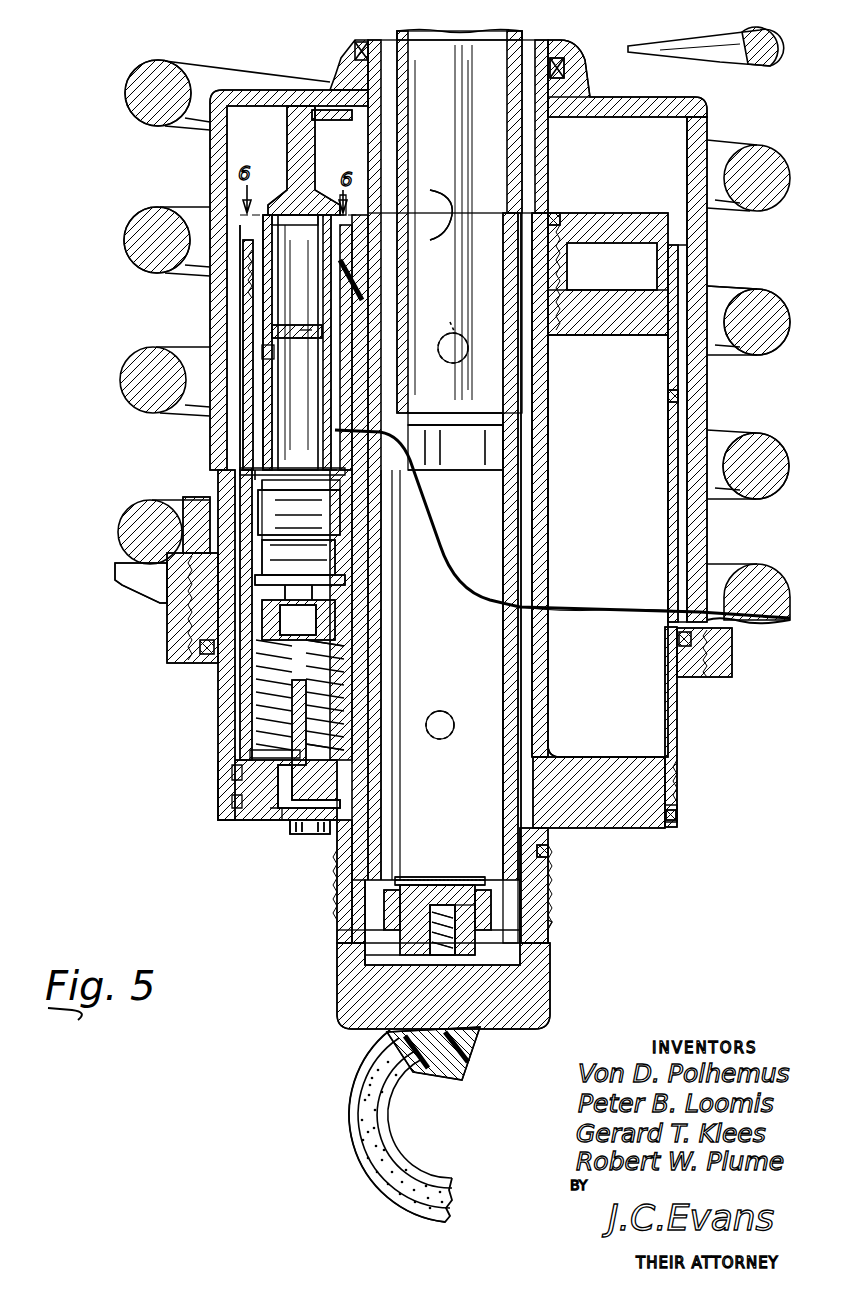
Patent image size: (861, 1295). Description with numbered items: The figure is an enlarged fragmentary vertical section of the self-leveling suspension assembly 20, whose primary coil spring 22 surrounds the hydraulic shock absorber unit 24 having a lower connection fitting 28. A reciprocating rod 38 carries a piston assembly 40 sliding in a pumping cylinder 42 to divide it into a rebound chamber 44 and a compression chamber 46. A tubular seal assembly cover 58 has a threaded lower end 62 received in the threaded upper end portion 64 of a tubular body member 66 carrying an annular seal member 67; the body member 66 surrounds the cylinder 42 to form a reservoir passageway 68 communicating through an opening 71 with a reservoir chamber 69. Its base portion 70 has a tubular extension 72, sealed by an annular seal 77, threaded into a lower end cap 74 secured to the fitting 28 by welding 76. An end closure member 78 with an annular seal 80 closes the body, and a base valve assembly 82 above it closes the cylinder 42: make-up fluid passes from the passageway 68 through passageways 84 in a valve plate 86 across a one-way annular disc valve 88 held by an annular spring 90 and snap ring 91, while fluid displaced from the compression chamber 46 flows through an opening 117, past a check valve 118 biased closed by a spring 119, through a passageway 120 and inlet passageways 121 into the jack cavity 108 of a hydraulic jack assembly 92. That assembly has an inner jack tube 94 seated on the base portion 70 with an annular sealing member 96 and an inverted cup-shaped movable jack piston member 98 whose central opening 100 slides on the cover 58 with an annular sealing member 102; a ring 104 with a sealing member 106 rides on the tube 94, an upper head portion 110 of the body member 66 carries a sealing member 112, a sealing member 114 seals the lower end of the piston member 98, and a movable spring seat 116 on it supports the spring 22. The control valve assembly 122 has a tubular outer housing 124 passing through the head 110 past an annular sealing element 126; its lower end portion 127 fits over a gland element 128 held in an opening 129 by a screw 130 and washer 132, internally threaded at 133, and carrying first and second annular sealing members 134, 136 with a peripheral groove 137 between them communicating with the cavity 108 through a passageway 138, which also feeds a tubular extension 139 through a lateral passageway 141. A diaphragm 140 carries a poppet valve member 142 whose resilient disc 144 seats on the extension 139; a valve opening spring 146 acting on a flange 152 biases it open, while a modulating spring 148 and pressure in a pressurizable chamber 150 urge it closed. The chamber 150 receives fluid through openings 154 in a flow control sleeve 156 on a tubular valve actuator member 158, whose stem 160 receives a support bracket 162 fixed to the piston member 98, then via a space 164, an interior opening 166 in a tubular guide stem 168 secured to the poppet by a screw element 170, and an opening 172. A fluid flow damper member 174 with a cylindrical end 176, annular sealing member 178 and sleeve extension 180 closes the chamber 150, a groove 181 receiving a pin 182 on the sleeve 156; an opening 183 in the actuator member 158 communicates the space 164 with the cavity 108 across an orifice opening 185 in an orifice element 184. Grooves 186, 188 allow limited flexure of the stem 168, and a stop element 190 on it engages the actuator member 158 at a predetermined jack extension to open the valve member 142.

The self-leveling suspension assembly 20 is at (128, 88).
The primary coil spring 22 is at (130, 236).
The double, direct-acting hydraulic shock absorber unit 24 is at (560, 124).
The connection fitting 28 is at (374, 1188).
The reciprocating rod 38 is at (470, 158).
The piston assembly 40 is at (512, 480).
The pumping cylinder 42 is at (526, 524).
The rebound chamber 44 is at (541, 386).
The compression chamber 46 is at (484, 612).
The seal assembly cover 58 is at (546, 182).
The lower threaded end 62 is at (556, 272).
The internally threaded upper end portion 64 is at (600, 264).
The tubular body member 66 is at (644, 416).
The annular seal member 67 is at (562, 222).
The fluid reservoir passageway 68 is at (524, 432).
The reservoir chamber 69 is at (640, 472).
The base portion 70 is at (626, 760).
The opening 71 is at (446, 722).
The tubular extension 72 is at (552, 886).
The lower end cap 74 is at (550, 926).
The welding 76 is at (392, 1040).
The annular seal 77 is at (550, 858).
The end closure member 78 is at (522, 1004).
The annular seal 80 is at (352, 938).
The base valve assembly 82 is at (480, 840).
The passageways 84 is at (390, 905).
The valve plate 86 is at (392, 960).
The one-way annular disc valve 88 is at (400, 877).
The annular spring 90 is at (416, 877).
The snap ring 91 is at (426, 880).
The hydraulic jack assembly 92 is at (709, 520).
The inner jack tube 94 is at (680, 705).
The annular sealing member 96 is at (680, 816).
The movable jack piston member 98 is at (695, 545).
The central opening 100 is at (562, 48).
The annular sealing member 102 is at (566, 70).
The ring 104 is at (682, 372).
The annular sealing member 106 is at (692, 398).
The jack cavity 108 is at (672, 200).
The upper head portion 110 is at (626, 336).
The annular sealing member 112 is at (712, 300).
The annular sealing member 114 is at (728, 660).
The movable spring seat 116 is at (118, 570).
The opening 117 is at (440, 885).
The check valve 118 is at (462, 888).
The spring 119 is at (440, 946).
The passageway 120 is at (550, 960).
The inlet passageways 121 is at (345, 898).
The control valve assembly 122 is at (292, 110).
The tubular outer housing 124 is at (250, 340).
The annular sealing element 126 is at (246, 302).
The lower separated end portion 127 is at (246, 735).
The gland element 128 is at (256, 822).
The opening 129 is at (334, 832).
The screw 130 is at (306, 830).
The washer 132 is at (292, 824).
The internal threads 133 is at (312, 836).
The first annular sealing member 134 is at (232, 770).
The second annular sealing member 136 is at (240, 808).
The peripheral groove 137 is at (232, 800).
The passageway 138 is at (300, 795).
The tubular extension 139 is at (262, 752).
The diaphragm 140 is at (384, 627).
The lateral passageway 141 is at (276, 822).
The poppet valve member 142 is at (250, 660).
The resilient disc 144 is at (384, 675).
The valve opening spring 146 is at (384, 697).
The modulating spring 148 is at (262, 470).
The pressurizable chamber 150 is at (384, 574).
The flange 152 is at (384, 651).
The openings 154 is at (436, 429).
The flow control sleeve 156 is at (256, 426).
The tubular valve actuator member 158 is at (262, 225).
The stem 160 is at (294, 142).
The support bracket 162 is at (340, 118).
The space 164 is at (312, 262).
The interior opening 166 is at (286, 492).
The tubular guide stem 168 is at (306, 325).
The screw element 170 is at (186, 600).
The opening 172 is at (384, 546).
The fluid flow damper member 174 is at (436, 530).
The cylindrical end 176 is at (384, 493).
The annular sealing member 178 is at (206, 500).
The tubular sleeve extension 180 is at (422, 460).
The groove 181 is at (304, 484).
The pin 182 is at (288, 440).
The opening 183 is at (318, 216).
The orifice element 184 is at (343, 205).
The orifice opening 185 is at (362, 213).
The groove 186 is at (312, 328).
The groove 188 is at (304, 337).
The stop element 190 is at (266, 352).